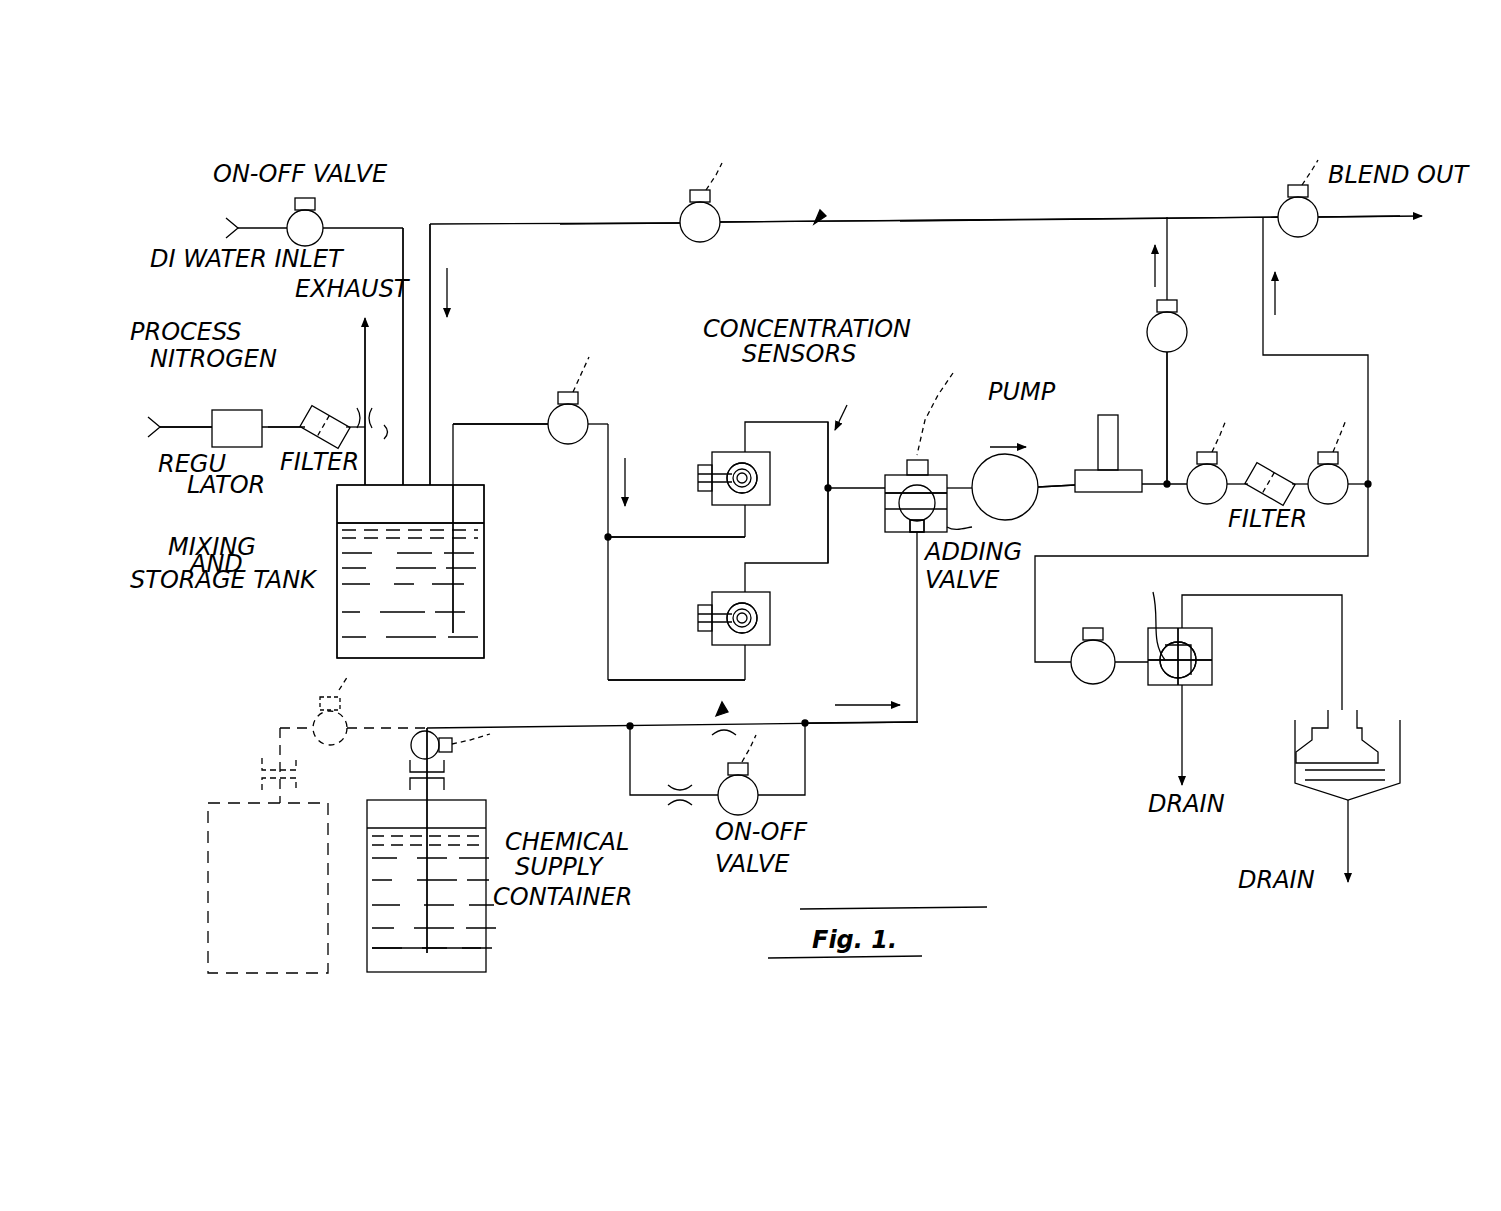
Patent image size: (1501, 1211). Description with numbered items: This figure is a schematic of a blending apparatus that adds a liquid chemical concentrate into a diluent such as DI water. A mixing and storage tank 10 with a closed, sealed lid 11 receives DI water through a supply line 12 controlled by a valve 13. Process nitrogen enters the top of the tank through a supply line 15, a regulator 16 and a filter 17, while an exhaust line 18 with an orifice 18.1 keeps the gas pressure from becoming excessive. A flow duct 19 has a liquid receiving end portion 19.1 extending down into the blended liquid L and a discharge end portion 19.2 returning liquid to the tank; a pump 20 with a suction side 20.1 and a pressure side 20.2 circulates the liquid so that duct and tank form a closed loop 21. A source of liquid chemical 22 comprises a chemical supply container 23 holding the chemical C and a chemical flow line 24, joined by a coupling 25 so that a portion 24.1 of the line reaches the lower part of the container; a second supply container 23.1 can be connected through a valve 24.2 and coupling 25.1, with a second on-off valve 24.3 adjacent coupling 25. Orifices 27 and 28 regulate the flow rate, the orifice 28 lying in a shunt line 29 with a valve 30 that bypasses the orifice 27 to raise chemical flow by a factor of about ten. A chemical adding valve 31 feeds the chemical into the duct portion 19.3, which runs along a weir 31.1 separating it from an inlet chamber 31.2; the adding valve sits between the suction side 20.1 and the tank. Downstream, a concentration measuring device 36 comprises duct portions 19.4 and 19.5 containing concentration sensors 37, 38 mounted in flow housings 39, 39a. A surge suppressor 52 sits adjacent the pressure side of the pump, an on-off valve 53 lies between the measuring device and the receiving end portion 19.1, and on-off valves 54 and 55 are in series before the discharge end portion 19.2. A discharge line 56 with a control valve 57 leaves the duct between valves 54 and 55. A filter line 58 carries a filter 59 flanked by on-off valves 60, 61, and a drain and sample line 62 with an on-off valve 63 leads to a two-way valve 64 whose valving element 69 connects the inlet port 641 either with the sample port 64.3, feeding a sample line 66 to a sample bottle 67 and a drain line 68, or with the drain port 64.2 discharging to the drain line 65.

The mixing and storage tank 10 is at (485, 552).
The lid 11 is at (474, 485).
The supply line 12 is at (384, 226).
The valve 13 is at (322, 217).
The supply line 15 is at (186, 428).
The regulator 16 is at (248, 410).
The filter 17 is at (338, 404).
The exhaust line 18 is at (362, 350).
The orifice 18.1 is at (388, 428).
The flow duct 19 is at (503, 422).
The liquid receiving end portion 19.1 is at (478, 533).
The discharge end portion 19.2 is at (432, 362).
The duct portion 19.3 is at (895, 480).
The flow duct portion 19.4 is at (676, 537).
The flow duct portion 19.5 is at (660, 680).
The pump 20 is at (1027, 455).
The suction side 20.1 is at (970, 470).
The pressure side 20.2 is at (1045, 486).
The closed loop 21 is at (820, 218).
The source of liquid chemical 22 is at (898, 722).
The chemical supply container 23 is at (486, 820).
The second supply container 23.1 is at (328, 955).
The chemical flow line 24 is at (920, 678).
The flow line portion 24.1 is at (425, 845).
The valve 24.2 is at (345, 720).
The second on-off valve 24.3 is at (432, 740).
The coupling 25 is at (448, 775).
The coupling 25.1 is at (258, 770).
The orifice 27 is at (722, 712).
The orifice 28 is at (680, 808).
The shunt line 29 is at (812, 780).
The valve 30 is at (756, 785).
The chemical adding valve 31 is at (885, 525).
The weir 31.1 is at (885, 510).
The inlet chamber 31.2 is at (915, 530).
The chemical concentration measuring device 36 is at (844, 469).
The concentration sensor 37 is at (758, 474).
The concentration sensor 38 is at (760, 618).
The flow housing 39 is at (725, 452).
The flow housing 39a is at (728, 592).
The surge suppressor 52 is at (1118, 492).
The on-off valve 53 is at (588, 410).
The on-off valve 54 is at (1187, 335).
The on-off valve 55 is at (720, 215).
The blended liquid discharge line 56 is at (1215, 218).
The on-off control valve 57 is at (1282, 206).
The filter line 58 is at (1338, 356).
The filter 59 is at (1258, 472).
The on-off control valve 60 is at (1218, 470).
The on-off control valve 61 is at (1340, 496).
The drain and sample collecting line 62 is at (1348, 556).
The on-off valve 63 is at (1078, 678).
The two-way valve 64 is at (1212, 650).
The drain port 64.2 is at (1195, 685).
The sample port 64.3 is at (1190, 640).
The inlet port 641 is at (1095, 632).
The drain line 65 is at (1184, 733).
The sample line 66 is at (1258, 595).
The sample bottle 67 is at (1368, 730).
The drain line 68 is at (1348, 828).
The valving element 69 is at (1196, 662).
The liquid chemical C is at (467, 930).
The blended liquid L is at (485, 595).